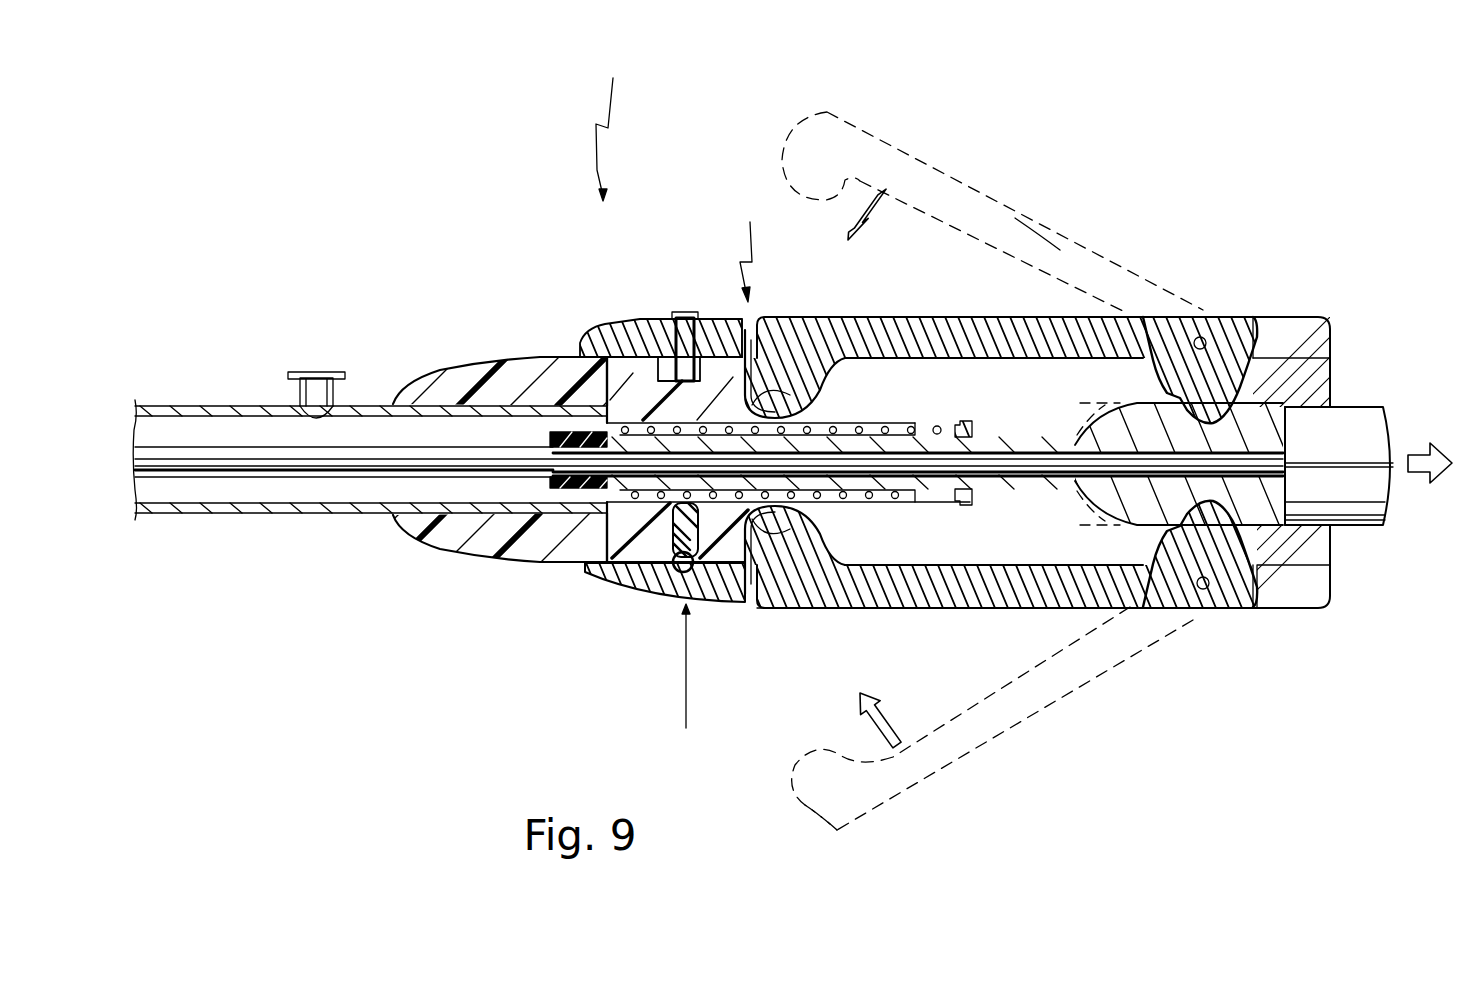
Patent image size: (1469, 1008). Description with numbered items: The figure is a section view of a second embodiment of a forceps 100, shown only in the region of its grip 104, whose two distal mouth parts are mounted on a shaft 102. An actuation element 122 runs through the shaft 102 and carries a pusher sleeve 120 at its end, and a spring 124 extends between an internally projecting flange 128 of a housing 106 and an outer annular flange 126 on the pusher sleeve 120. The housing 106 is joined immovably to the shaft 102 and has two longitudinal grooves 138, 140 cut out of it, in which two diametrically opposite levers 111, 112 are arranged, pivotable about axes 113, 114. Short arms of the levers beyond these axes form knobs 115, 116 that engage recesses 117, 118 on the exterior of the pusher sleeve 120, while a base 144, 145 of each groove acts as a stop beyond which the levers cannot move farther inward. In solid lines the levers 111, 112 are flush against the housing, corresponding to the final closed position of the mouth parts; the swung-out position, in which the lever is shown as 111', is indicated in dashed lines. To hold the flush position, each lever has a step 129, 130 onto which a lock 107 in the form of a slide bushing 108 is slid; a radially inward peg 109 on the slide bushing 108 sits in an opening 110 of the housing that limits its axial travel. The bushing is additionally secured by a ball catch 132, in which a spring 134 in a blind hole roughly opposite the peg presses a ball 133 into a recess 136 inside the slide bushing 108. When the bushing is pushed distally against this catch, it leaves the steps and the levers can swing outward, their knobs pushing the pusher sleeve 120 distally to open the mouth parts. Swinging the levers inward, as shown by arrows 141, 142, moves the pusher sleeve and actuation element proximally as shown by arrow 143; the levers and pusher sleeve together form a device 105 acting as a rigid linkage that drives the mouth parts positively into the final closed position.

The forceps 100 is at (621, 130).
The shaft 102 is at (216, 406).
The grip 104 is at (583, 562).
The device 105 is at (1082, 390).
The housing 106 is at (515, 388).
The lock 107 is at (757, 277).
The slide bushing 108 is at (635, 325).
The peg 109 is at (688, 316).
The opening 110 is at (600, 358).
The lever 111 is at (1005, 430).
The upper housing arm released position 111' is at (1062, 186).
The lever 112 is at (903, 609).
The axis 113 is at (1207, 338).
The axis 114 is at (1198, 620).
The knob 115 is at (1293, 325).
The knob 116 is at (1300, 568).
The recess 117 is at (1313, 365).
The recess 118 is at (1345, 530).
The pusher sleeve 120 is at (1360, 418).
The actuation element 122 is at (300, 457).
The spring 124 is at (937, 425).
The outer annular flange 126 is at (975, 428).
The internally projecting flange 128 is at (614, 540).
The step 129 is at (808, 122).
The step 130 is at (813, 800).
The ball catch 132 is at (685, 679).
The ball 133 is at (703, 577).
The spring 134 is at (760, 602).
The recess 136 is at (683, 598).
The longitudinal groove 138 is at (803, 397).
The longitudinal groove 140 is at (805, 525).
The arrow 141 is at (888, 716).
The arrow 142 is at (880, 225).
The arrow 143 is at (1422, 470).
The base 144 is at (878, 420).
The base 145 is at (845, 602).